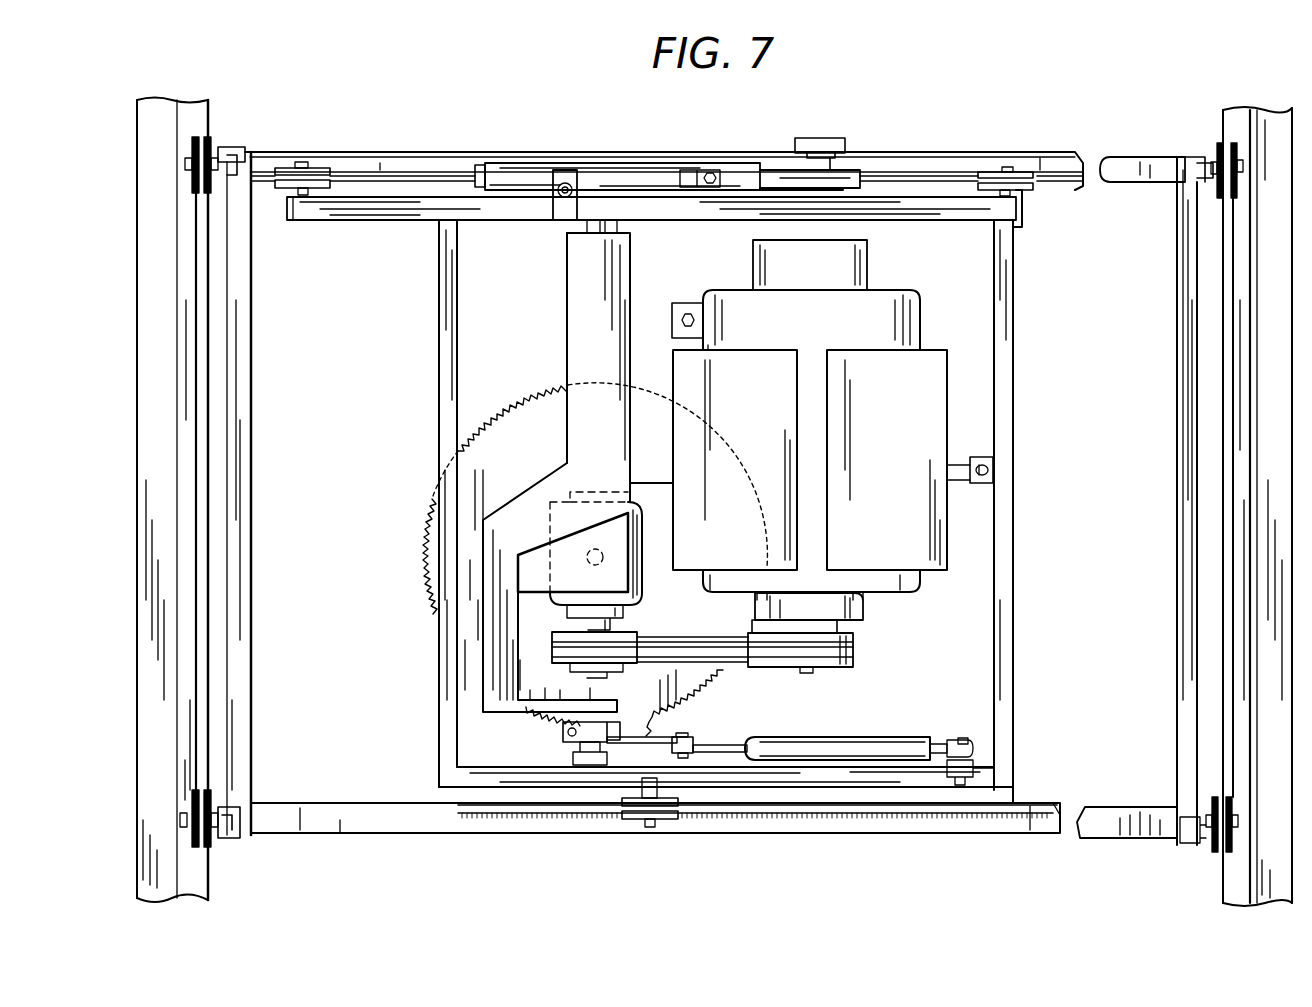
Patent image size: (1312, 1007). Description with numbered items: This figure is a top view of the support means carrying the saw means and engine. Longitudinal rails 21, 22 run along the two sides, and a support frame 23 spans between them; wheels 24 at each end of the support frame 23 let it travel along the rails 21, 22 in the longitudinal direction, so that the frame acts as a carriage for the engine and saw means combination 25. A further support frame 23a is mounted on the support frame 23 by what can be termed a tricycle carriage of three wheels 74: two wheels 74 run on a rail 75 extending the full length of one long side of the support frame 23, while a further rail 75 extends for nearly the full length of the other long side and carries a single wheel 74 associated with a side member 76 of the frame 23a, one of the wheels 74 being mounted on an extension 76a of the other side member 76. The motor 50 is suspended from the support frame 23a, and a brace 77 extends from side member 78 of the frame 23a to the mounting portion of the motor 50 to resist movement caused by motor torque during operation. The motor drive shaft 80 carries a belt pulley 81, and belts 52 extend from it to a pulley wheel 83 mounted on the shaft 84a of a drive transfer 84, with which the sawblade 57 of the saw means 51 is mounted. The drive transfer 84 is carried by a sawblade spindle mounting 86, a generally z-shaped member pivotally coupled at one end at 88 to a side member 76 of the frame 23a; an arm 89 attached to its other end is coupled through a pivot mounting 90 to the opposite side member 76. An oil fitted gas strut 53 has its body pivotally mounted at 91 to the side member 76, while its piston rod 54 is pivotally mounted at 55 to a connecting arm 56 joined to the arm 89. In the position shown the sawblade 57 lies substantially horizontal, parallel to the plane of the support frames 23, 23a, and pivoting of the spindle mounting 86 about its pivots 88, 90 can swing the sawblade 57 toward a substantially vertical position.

The longitudinal rail 21 is at (155, 375).
The longitudinal rail 22 is at (1263, 300).
The support frame 23 is at (447, 152).
The further support frame 23a is at (1017, 702).
The wheels 24 is at (210, 140).
The engine and saw means combination 25 is at (1017, 573).
The motor 50 is at (942, 407).
The saw blade 51 is at (563, 378).
The belt 52 is at (715, 655).
The oil fitted gas strut 53 is at (877, 758).
The piston rod 54 is at (747, 740).
The pivot mounting 55 is at (693, 733).
The connecting arm 56 is at (633, 737).
The sawblade 57 is at (423, 548).
The wheels 74 is at (300, 167).
The rail 75 is at (925, 176).
The side member 76 is at (625, 190).
The extension 76a is at (377, 197).
The brace 77 is at (957, 485).
The side member 78 is at (1017, 280).
The motor drive shaft 80 is at (837, 625).
The belt pulley 81 is at (853, 668).
The pulley wheel 83 is at (520, 668).
The drive transfer 84 is at (640, 585).
The shaft 84a is at (552, 632).
The sawblade spindle mounting 86 is at (567, 298).
The pivot 88 is at (587, 225).
The arm 89 is at (550, 717).
The pivot mounting 90 is at (563, 763).
The pivot mounting 91 is at (977, 764).